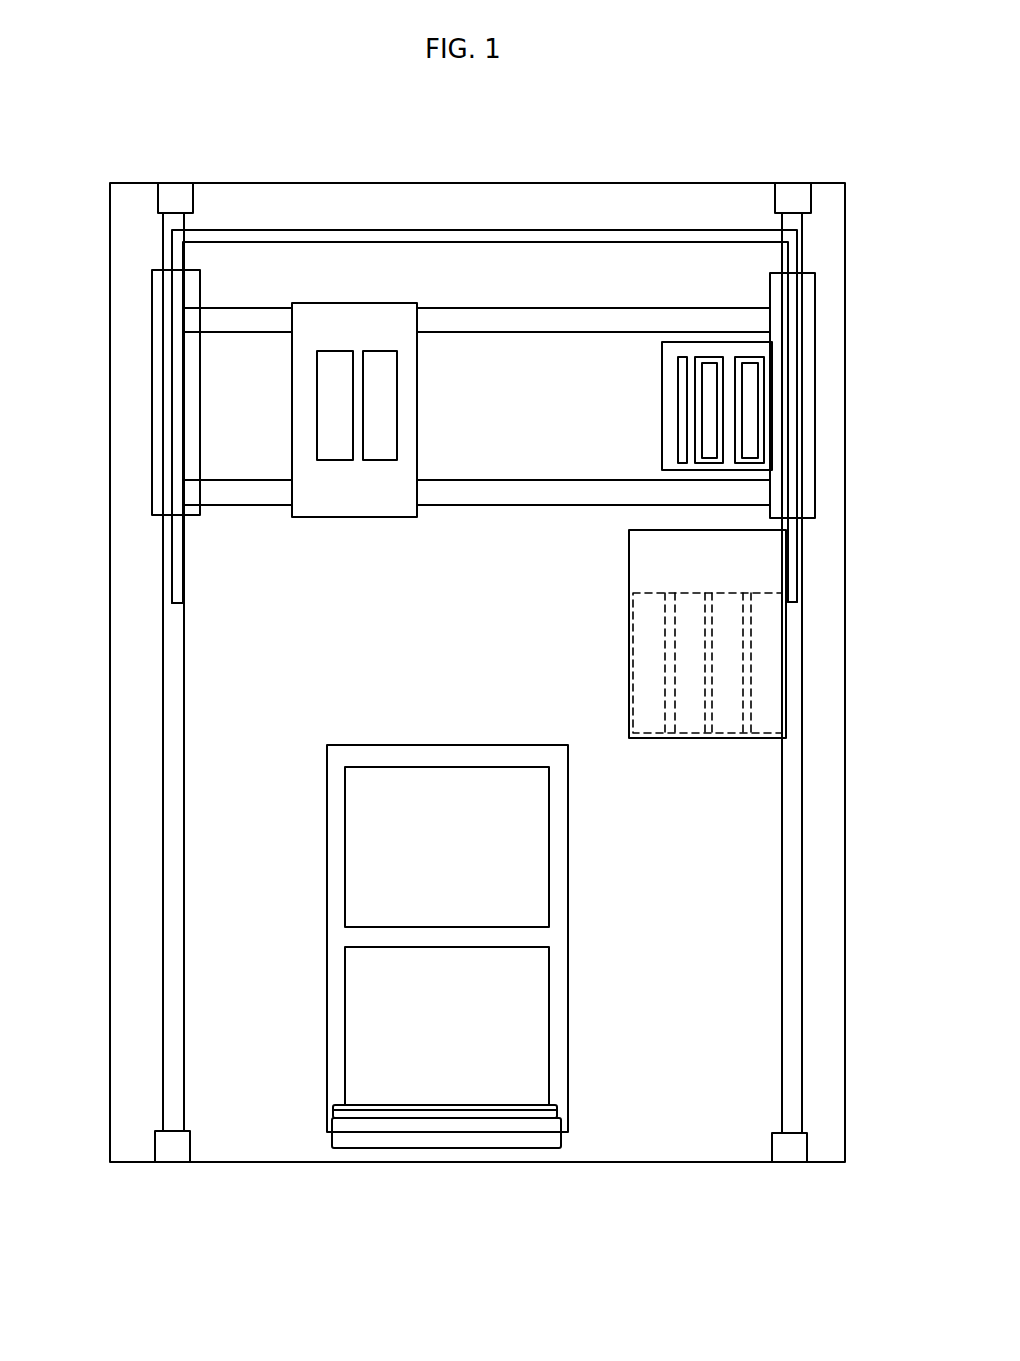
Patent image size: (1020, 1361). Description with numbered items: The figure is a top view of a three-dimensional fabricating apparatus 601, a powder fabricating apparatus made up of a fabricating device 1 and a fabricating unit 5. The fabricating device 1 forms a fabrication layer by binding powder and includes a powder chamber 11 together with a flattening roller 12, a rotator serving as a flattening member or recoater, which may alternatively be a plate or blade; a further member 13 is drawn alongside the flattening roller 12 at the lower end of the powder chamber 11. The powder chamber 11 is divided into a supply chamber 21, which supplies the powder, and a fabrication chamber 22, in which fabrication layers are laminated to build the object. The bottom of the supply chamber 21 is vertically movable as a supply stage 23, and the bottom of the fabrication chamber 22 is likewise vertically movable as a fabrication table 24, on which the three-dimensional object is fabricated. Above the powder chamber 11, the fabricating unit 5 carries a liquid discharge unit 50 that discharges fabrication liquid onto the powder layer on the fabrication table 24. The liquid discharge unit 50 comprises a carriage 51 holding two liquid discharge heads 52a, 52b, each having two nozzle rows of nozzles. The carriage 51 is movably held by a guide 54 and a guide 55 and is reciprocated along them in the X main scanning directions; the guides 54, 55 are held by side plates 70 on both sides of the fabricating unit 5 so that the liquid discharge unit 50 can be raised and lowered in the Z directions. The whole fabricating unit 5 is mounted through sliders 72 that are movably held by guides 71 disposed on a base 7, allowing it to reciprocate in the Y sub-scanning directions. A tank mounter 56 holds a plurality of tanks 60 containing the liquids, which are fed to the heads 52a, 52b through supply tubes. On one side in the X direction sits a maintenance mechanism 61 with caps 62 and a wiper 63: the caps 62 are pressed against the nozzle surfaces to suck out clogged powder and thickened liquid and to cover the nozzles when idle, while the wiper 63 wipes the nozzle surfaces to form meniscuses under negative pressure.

The fabricating device 1 is at (348, 1153).
The fabricating unit 5 is at (148, 255).
The three-dimensional fabricating apparatus 601 is at (685, 152).
The base 7 is at (836, 932).
The powder chamber 11 is at (440, 988).
The flattening roller 12 is at (417, 1137).
The guide member 13 is at (455, 1112).
The supply chamber 21 is at (357, 1003).
The fabrication chamber 22 is at (350, 830).
The supply stage 23 is at (530, 1012).
The fabrication table 24 is at (528, 858).
The liquid discharge unit 50 is at (359, 353).
The carriage 51 is at (327, 317).
The liquid discharge head 52a is at (342, 452).
The liquid discharge head 52b is at (378, 448).
The guide 54 is at (510, 315).
The guide 55 is at (514, 497).
The tank mounter 56 is at (774, 634).
The tanks 60 is at (767, 698).
The maintenance mechanism 61 is at (748, 408).
The caps 62 is at (708, 397).
The wiper 63 is at (677, 423).
The side plates 70 is at (175, 442).
The guide 71 is at (170, 622).
The slider 72 is at (162, 390).